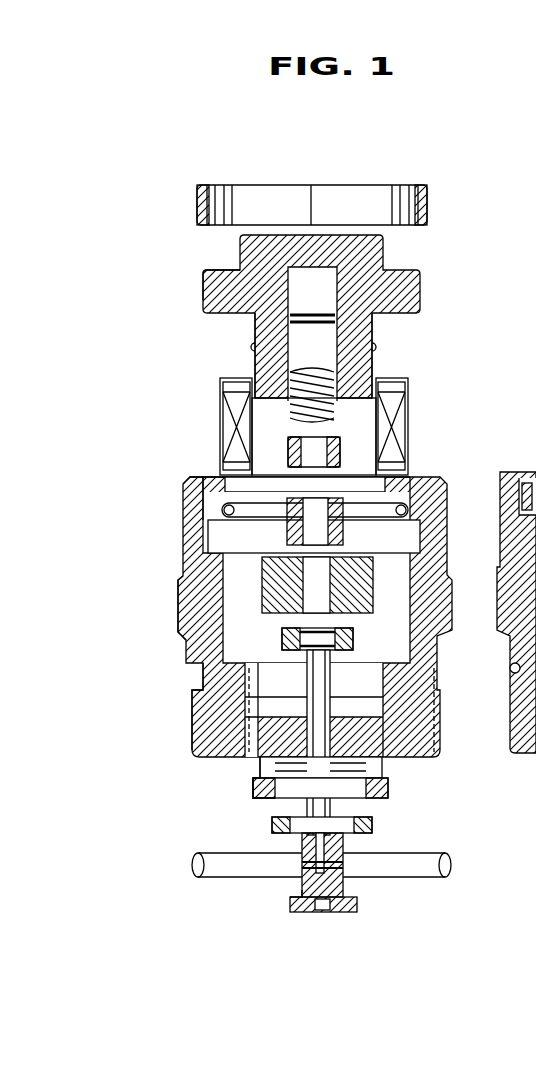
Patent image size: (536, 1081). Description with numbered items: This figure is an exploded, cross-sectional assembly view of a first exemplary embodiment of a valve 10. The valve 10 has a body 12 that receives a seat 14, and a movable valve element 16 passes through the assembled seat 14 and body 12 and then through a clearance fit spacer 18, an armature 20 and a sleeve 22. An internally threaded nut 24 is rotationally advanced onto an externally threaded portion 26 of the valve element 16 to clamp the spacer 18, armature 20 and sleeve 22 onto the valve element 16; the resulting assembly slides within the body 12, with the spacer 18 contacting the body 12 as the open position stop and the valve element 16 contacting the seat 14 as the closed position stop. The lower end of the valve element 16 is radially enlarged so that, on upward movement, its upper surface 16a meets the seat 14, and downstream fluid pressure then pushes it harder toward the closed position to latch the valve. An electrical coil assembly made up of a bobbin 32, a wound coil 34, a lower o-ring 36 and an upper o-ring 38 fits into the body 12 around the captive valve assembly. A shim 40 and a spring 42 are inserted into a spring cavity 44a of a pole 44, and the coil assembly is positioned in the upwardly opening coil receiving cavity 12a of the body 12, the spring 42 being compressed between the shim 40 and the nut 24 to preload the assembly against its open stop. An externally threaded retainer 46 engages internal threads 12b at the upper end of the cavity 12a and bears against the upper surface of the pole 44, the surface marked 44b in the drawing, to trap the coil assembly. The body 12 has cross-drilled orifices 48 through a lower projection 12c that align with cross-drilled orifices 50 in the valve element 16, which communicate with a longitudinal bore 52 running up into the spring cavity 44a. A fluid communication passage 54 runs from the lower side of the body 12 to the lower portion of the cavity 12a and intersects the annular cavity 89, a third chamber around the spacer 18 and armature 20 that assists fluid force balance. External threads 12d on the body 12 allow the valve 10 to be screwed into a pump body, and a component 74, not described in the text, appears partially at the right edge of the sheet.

The valve 10 is at (333, 153).
The externally threaded retainer 46 is at (425, 200).
The pole 44 is at (295, 287).
The spring receiving cavity 44a is at (290, 280).
The cap flange 44b is at (209, 273).
The shim 40 is at (250, 316).
The upper o-ring 38 is at (378, 347).
The bobbin 32 is at (395, 378).
The spring 42 is at (222, 383).
The wound coil 34 is at (256, 418).
The internally threaded nut 24 is at (340, 447).
The lower o-ring 36 is at (433, 480).
The internal threads 12b is at (216, 480).
The sleeve 22 is at (290, 527).
The armature 20 is at (262, 562).
The coil receiving cavity 12a is at (205, 610).
The clearance fit spacer 18 is at (282, 641).
The fluid communication passage 54 is at (215, 675).
The external threads 12d is at (192, 707).
The externally threaded portion 26 is at (432, 683).
The annular cavity 89 is at (437, 735).
The body 12 is at (253, 621).
The cross-drilled orifices 48 is at (264, 800).
The lower projection 12c is at (258, 790).
The longitudinal bore 52 is at (372, 826).
The seat 14 is at (235, 818).
The upper surface 16a is at (300, 893).
The movable valve element 16 is at (220, 949).
The cross-drilled orifices 50 is at (350, 878).
The adjacent valve 74 is at (516, 649).